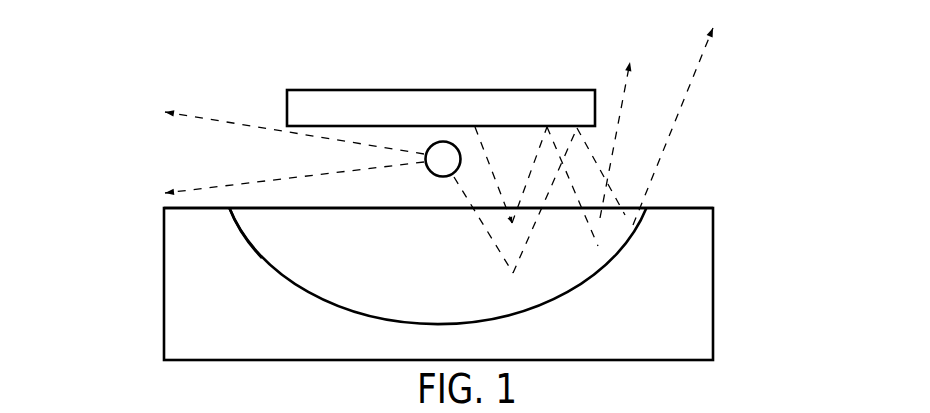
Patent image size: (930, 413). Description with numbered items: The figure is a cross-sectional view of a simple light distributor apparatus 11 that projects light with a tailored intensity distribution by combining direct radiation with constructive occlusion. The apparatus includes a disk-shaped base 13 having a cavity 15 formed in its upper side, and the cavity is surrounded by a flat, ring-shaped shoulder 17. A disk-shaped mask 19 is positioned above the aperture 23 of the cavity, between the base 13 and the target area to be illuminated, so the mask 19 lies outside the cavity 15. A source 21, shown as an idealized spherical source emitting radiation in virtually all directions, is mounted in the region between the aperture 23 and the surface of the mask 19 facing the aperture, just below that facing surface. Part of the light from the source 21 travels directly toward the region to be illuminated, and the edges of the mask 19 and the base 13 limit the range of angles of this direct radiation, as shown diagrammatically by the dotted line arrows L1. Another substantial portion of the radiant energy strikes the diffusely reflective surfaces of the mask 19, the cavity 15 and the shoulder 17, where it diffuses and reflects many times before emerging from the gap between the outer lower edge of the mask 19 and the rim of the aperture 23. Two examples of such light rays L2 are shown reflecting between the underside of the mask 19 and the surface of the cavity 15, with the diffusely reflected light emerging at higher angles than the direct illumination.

The light distributor apparatus 11 is at (150, 63).
The disk-shaped base 13 is at (717, 275).
The cavity 15 is at (236, 226).
The shoulder 17 is at (683, 206).
The mask 19 is at (390, 90).
The source 21 is at (445, 143).
The aperture 23 is at (285, 210).
The dotted line arrows L1 is at (278, 145).
The light rays L2 is at (665, 112).